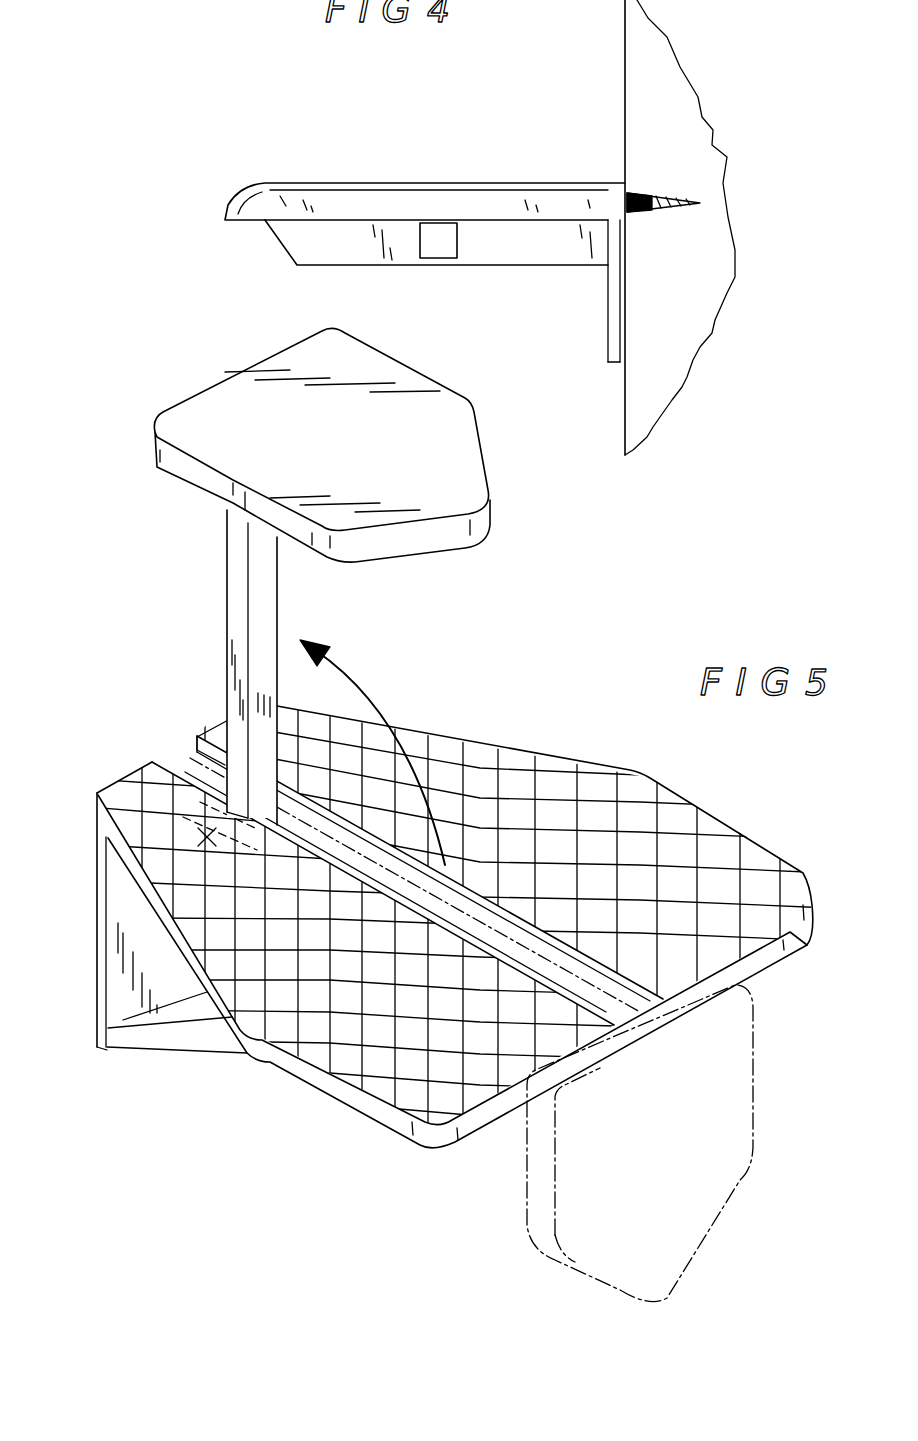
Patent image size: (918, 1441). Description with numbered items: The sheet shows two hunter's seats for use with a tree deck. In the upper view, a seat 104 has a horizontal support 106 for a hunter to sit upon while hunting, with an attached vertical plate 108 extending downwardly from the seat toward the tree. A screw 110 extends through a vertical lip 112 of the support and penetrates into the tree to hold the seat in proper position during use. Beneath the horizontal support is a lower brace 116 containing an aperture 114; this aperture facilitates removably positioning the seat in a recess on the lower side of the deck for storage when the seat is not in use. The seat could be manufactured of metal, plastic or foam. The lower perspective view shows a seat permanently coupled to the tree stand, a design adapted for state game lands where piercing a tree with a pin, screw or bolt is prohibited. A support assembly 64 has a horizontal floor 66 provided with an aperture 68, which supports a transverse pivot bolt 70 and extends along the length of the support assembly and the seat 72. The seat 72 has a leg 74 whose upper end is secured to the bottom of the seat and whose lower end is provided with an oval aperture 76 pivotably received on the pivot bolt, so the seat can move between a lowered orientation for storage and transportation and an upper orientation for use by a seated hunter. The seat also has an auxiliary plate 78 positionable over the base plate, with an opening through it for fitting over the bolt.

In FIG. 5, the support assembly 64 is at (685, 795).
In FIG. 5, the horizontal floor 66 is at (722, 850).
In FIG. 5, the aperture 68 is at (163, 765).
In FIG. 5, the transverse pivot bolt 70 is at (210, 838).
In FIG. 5, the seat 72 is at (428, 438).
In FIG. 5, the leg 74 is at (207, 666).
In FIG. 5, the oval aperture 76 is at (235, 782).
In FIG. 5, the auxiliary plate 78 is at (97, 988).
In FIG. 4, the seat 104 is at (237, 190).
In FIG. 4, the horizontal support 106 is at (439, 147).
In FIG. 4, the vertical plate 108 is at (610, 363).
In FIG. 4, the screw 110 is at (662, 197).
In FIG. 4, the vertical lip 112 is at (628, 193).
In FIG. 4, the aperture 114 is at (457, 243).
In FIG. 4, the lower brace 116 is at (357, 253).